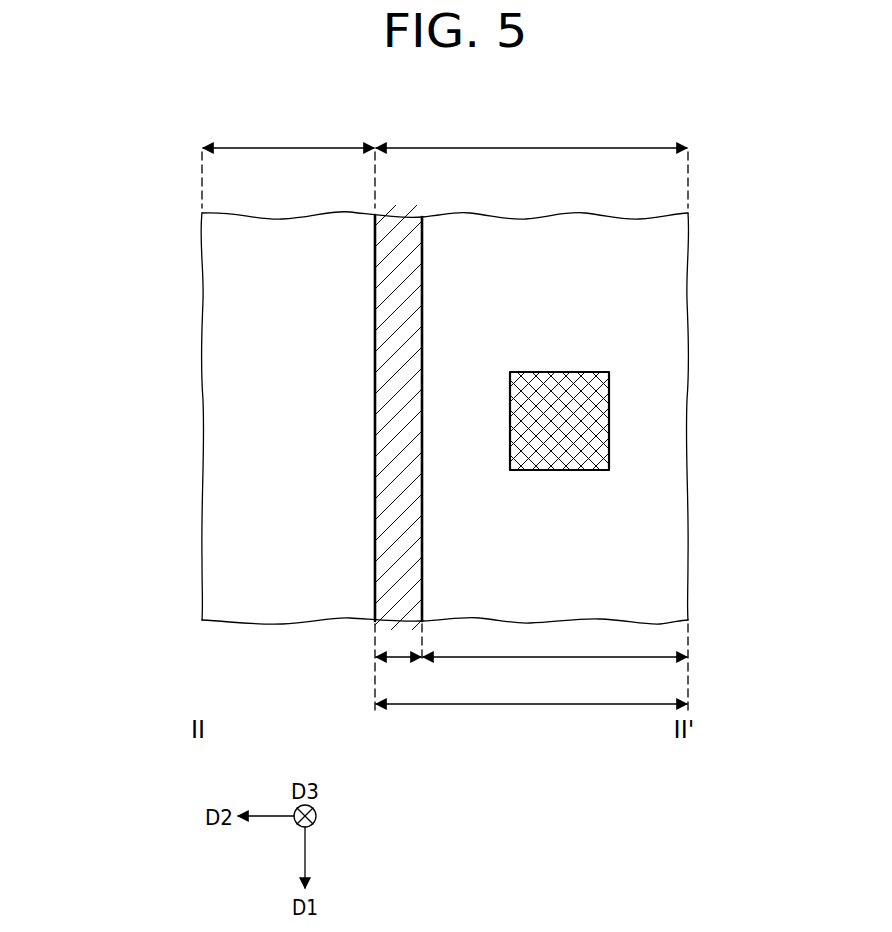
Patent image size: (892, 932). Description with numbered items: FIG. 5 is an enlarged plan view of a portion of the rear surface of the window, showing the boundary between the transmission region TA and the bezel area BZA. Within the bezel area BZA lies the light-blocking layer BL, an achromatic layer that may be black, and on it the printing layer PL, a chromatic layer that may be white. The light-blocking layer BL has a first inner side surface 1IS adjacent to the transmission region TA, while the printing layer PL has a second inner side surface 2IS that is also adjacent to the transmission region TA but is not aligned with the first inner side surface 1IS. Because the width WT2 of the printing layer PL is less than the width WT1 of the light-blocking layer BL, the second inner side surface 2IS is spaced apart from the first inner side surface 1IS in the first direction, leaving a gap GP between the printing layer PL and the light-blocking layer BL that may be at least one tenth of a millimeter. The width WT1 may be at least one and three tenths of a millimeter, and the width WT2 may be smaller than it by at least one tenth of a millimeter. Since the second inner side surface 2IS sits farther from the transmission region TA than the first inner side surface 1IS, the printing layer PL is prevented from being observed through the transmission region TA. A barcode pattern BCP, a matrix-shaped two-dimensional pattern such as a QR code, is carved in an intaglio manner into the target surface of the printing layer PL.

The transmission region TA is at (288, 135).
The bezel area BZA is at (531, 135).
The printing layer PL is at (678, 298).
The barcode pattern BCP is at (596, 427).
The light-blocking layer BL is at (405, 514).
The first inner side surface 1IS is at (374, 410).
The second inner side surface 2IS is at (421, 339).
The gap GP is at (398, 672).
The width of the light-blocking layer WT1 is at (531, 719).
The width of the printing layer WT2 is at (555, 672).